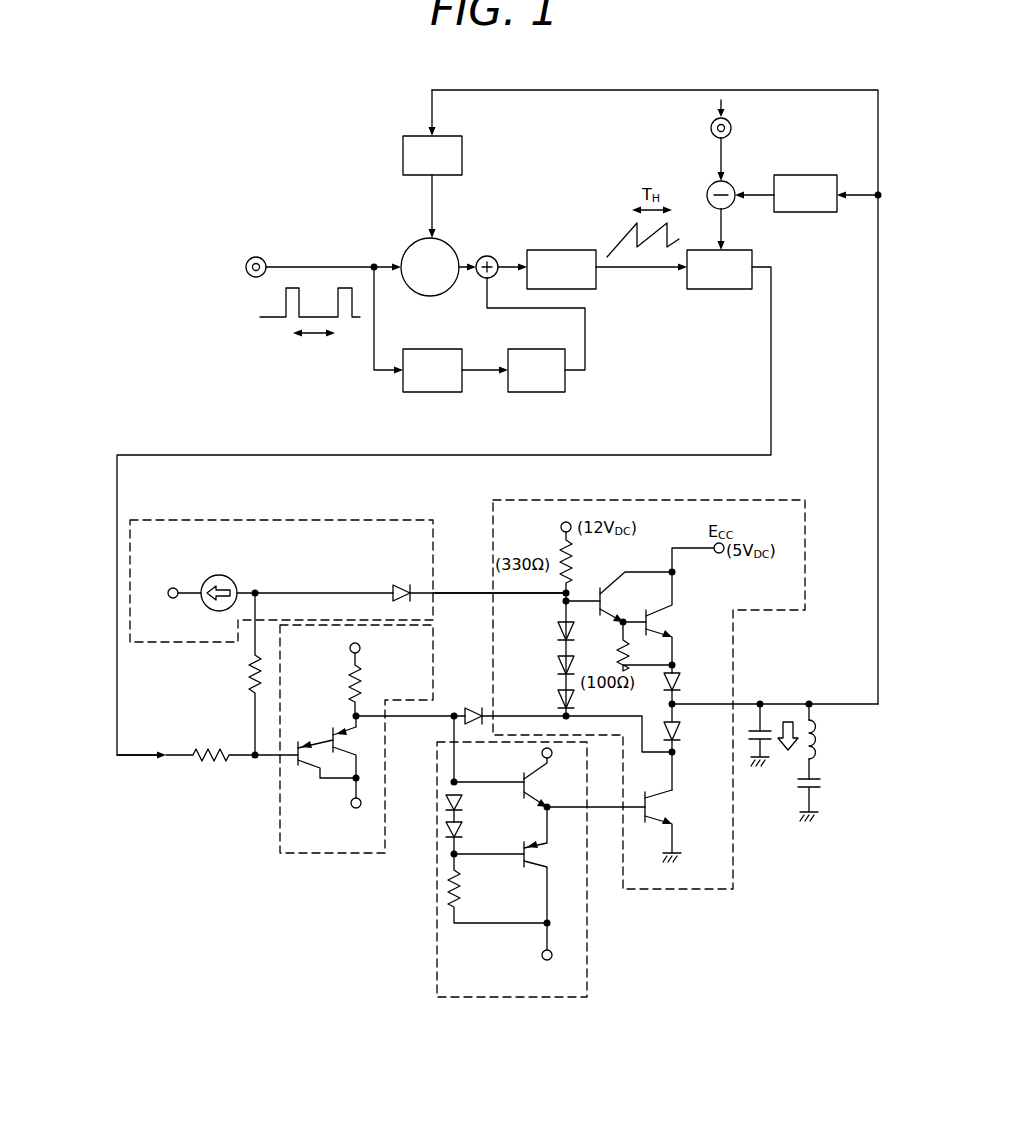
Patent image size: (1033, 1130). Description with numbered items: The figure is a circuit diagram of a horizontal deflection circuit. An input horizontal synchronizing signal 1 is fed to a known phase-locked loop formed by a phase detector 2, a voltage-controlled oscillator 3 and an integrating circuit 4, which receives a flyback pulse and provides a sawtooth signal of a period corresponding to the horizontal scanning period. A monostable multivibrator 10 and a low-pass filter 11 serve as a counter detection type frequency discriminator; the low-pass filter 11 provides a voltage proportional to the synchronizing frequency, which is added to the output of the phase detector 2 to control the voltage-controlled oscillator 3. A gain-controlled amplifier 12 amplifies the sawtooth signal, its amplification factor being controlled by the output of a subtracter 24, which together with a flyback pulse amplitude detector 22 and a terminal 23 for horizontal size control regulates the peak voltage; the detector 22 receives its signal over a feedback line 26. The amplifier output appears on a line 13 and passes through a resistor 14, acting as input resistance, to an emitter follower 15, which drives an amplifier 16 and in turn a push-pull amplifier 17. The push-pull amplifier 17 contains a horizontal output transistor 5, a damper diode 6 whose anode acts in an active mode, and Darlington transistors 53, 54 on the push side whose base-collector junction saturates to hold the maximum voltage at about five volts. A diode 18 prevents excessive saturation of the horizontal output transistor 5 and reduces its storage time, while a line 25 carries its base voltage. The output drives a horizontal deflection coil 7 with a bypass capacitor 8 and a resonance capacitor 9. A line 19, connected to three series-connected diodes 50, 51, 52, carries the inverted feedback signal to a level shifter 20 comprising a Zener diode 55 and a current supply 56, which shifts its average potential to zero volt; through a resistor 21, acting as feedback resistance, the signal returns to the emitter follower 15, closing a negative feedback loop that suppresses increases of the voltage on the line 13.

The input horizontal synchronizing signal 1 is at (312, 265).
The phase detector 2 is at (451, 248).
The voltage-controlled oscillator 3 is at (577, 250).
The integrating circuit 4 is at (462, 152).
The horizontal output transistor 5 is at (668, 807).
The damper diode 6 is at (683, 681).
The horizontal deflection coil 7 is at (818, 739).
The bypass capacitor 8 is at (820, 791).
The resonance capacitor 9 is at (768, 745).
The monostable multivibrator 10 is at (455, 336).
The low-pass filter 11 is at (553, 336).
The gain-controlled amplifier 12 is at (752, 257).
The line 13 is at (140, 760).
The resistor 14 is at (218, 762).
The emitter follower 15 is at (340, 853).
The amplifier 16 is at (533, 998).
The push-pull amplifier 17 is at (690, 889).
The diode 18 is at (470, 710).
The line 19 is at (452, 590).
The level shifter 20 is at (388, 520).
The resistor 21 is at (245, 672).
The flyback pulse amplitude detector 22 is at (818, 175).
The terminal for horizontal size control 23 is at (742, 116).
The subtracter 24 is at (707, 190).
The base voltage line 25 is at (600, 812).
The feedback line 26 is at (838, 90).
The diode 50 is at (556, 632).
The diode 51 is at (556, 666).
The diode 52 is at (556, 698).
The Darlington transistor 53 is at (603, 588).
The Darlington transistor 54 is at (649, 612).
The Zener diode 55 is at (396, 598).
The current supply 56 is at (240, 582).